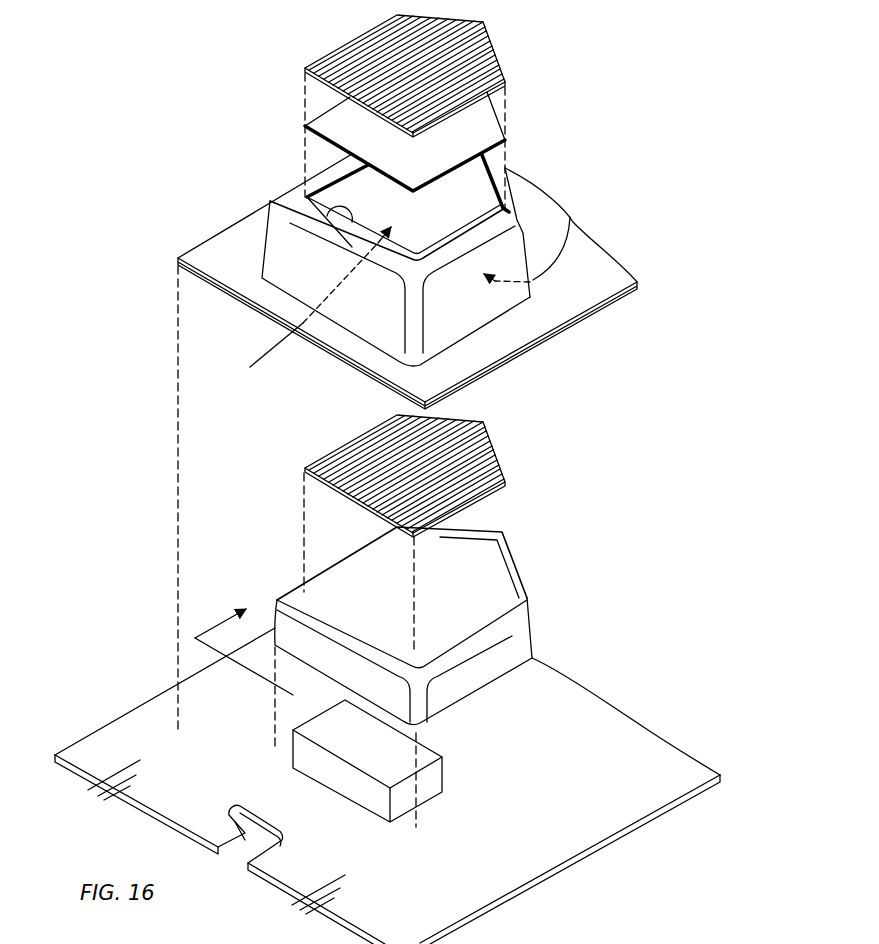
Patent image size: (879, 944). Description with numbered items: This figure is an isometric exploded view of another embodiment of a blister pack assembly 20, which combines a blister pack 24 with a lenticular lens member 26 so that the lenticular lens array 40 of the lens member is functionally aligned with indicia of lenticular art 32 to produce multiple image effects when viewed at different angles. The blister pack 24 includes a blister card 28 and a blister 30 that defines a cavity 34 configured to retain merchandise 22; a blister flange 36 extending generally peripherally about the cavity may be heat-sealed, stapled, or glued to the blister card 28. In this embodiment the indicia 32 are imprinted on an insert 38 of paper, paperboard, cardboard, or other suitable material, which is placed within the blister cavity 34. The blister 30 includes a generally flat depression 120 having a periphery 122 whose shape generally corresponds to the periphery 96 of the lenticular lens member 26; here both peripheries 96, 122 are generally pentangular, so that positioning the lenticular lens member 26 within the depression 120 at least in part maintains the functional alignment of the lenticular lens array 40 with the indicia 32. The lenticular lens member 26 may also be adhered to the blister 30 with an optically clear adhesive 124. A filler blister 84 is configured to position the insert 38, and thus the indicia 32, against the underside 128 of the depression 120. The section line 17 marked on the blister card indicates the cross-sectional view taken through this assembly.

The blister pack assembly 20 is at (176, 53).
The blister pack 24 is at (205, 57).
The lenticular lens member 26 is at (567, 34).
The lenticular lens array 40 is at (518, 31).
The periphery 96 is at (473, 104).
The depression 120 is at (470, 182).
The optically clear adhesive 124 is at (317, 134).
The blister 30 is at (278, 213).
The periphery 122 is at (350, 212).
The cavity 34 is at (538, 240).
The blister flange 36 is at (545, 310).
The underside 128 is at (300, 306).
The insert 38 is at (487, 421).
The indicia of lenticular art 32 is at (482, 481).
The filler blister 84 is at (497, 571).
The section line 17- 17 is at (244, 637).
The merchandise 22 is at (432, 780).
The blister card 28 is at (593, 855).